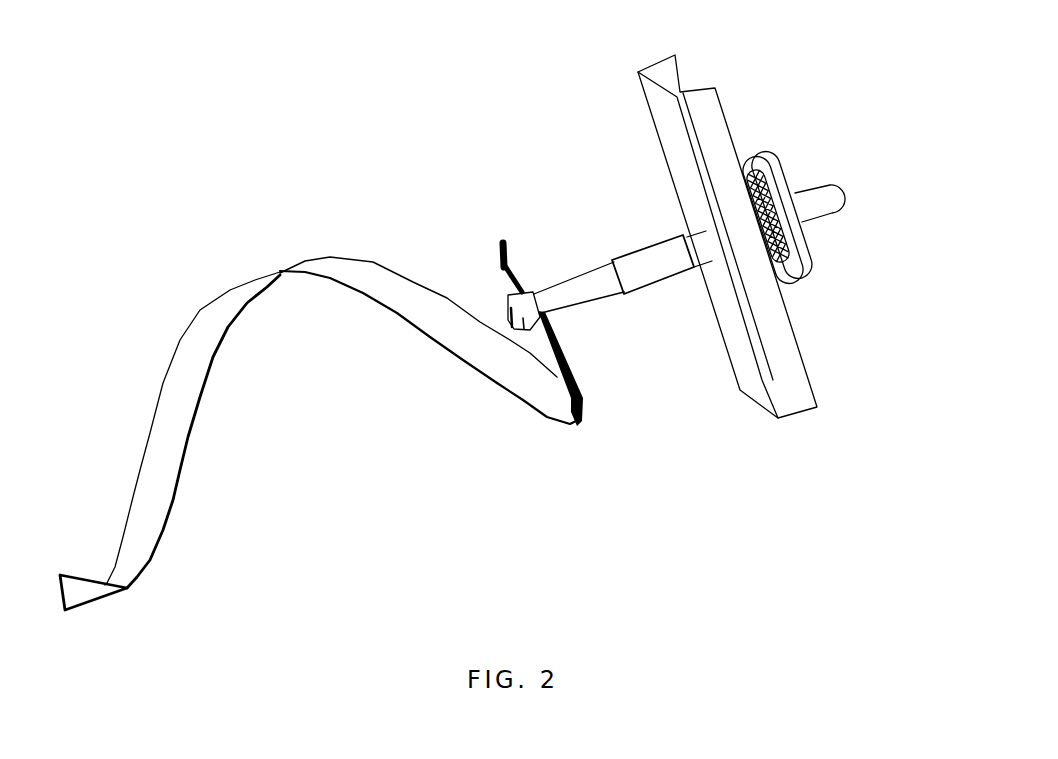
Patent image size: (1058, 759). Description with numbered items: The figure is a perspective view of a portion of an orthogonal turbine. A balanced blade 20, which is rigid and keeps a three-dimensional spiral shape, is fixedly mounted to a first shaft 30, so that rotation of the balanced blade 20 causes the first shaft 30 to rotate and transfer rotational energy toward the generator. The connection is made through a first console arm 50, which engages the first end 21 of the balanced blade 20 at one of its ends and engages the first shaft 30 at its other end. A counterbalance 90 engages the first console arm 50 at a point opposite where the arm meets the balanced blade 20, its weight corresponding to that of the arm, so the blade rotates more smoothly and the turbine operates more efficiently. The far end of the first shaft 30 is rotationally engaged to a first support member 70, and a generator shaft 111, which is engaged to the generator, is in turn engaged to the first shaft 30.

The balanced blade 20 is at (377, 280).
The first end 21 is at (555, 394).
The first shaft 30 is at (640, 281).
The first console arm 50 is at (557, 357).
The first support member 70 is at (775, 342).
The counterbalance 90 is at (500, 240).
The generator shaft 111 is at (827, 201).